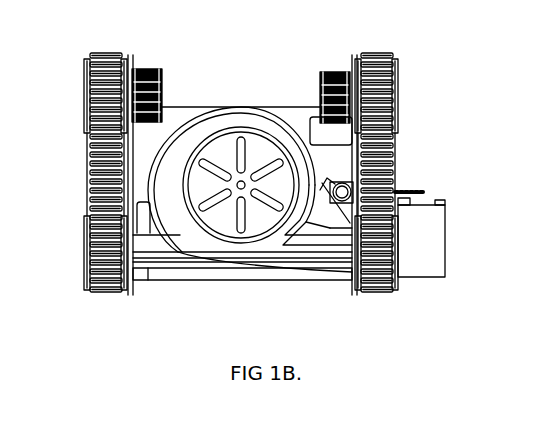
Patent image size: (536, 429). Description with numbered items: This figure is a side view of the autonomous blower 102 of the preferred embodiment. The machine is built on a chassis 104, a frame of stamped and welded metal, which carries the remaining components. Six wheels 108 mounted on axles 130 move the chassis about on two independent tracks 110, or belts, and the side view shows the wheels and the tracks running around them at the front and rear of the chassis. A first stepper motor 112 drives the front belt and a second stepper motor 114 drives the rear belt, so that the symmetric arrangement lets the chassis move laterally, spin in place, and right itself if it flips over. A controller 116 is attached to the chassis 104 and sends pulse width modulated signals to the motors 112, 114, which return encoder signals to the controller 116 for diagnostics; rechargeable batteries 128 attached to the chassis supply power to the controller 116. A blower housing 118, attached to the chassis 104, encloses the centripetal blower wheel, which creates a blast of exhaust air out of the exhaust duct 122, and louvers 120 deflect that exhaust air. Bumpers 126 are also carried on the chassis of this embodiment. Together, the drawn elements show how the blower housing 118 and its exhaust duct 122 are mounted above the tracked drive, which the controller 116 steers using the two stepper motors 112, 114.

The autonomous blower 102 is at (242, 161).
The chassis 104 is at (172, 112).
The wheels 108 is at (84, 267).
The tracks 110 is at (107, 167).
The first stepper motor 112 is at (335, 75).
The second stepper motor 114 is at (153, 70).
The controller 116 is at (355, 112).
The blower housing 118 is at (233, 113).
The louvers 120 is at (428, 248).
The exhaust duct 122 is at (337, 265).
The bumpers 126 is at (273, 275).
The rechargeable batteries 128 is at (147, 215).
The axles 130 is at (207, 253).